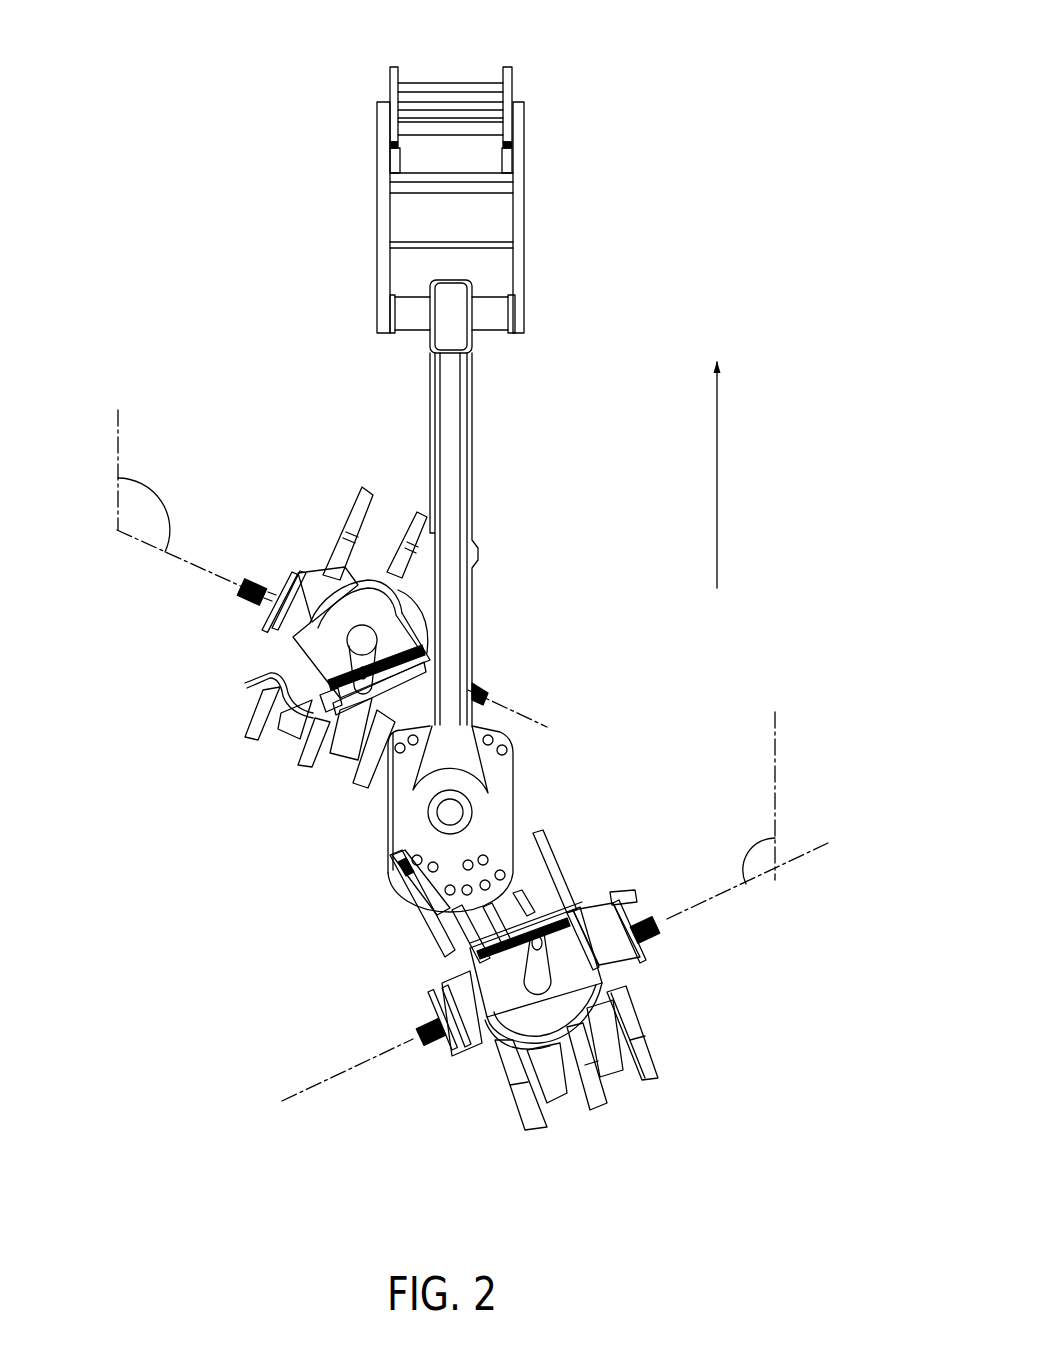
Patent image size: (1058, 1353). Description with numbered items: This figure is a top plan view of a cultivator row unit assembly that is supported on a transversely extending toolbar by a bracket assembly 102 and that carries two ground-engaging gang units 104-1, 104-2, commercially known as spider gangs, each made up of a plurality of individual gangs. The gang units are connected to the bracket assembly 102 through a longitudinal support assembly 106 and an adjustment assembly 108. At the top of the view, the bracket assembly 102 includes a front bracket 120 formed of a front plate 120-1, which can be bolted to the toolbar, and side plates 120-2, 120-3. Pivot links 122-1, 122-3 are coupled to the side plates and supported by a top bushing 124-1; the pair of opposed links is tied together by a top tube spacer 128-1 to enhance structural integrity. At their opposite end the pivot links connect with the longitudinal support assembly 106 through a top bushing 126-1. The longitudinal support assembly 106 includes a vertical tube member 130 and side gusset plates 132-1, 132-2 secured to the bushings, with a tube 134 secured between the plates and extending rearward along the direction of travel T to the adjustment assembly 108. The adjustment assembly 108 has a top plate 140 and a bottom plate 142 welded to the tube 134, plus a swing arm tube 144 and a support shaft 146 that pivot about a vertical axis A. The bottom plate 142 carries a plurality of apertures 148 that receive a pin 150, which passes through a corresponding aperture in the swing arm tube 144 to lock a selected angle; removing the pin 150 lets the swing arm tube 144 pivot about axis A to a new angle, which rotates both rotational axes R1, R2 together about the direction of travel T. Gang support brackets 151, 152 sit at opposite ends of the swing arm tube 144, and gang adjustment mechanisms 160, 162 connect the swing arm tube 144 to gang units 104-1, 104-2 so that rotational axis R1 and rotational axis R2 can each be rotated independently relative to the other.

The bracket assembly 102 is at (459, 168).
The gang unit 104-1 is at (332, 599).
The gang unit 104-2 is at (555, 953).
The longitudinal support assembly 106 is at (469, 502).
The adjustment assembly 108 is at (482, 796).
The front bracket 120 is at (438, 86).
The front plate 120-1 is at (453, 82).
The side plate 120-2 is at (390, 70).
The side plate 120-3 is at (507, 67).
The pivot link 122-1 is at (380, 205).
The pivot link 122-3 is at (517, 193).
The top bushing 124-1 is at (465, 128).
The top bushing 126-1 is at (488, 320).
The top tube spacer 128-1 is at (407, 225).
The vertical tube member 130 is at (452, 338).
The side gusset plate 132-1 is at (430, 362).
The side gusset plate 132-2 is at (475, 435).
The tube 134 is at (442, 407).
The top plate 140 is at (455, 767).
The bottom plate 142 is at (398, 805).
The swing arm tube 144 is at (507, 902).
The support shaft 146 is at (472, 813).
The apertures 148 is at (493, 727).
The pin 150 is at (400, 893).
The gang support bracket 151 is at (355, 603).
The gang support bracket 152 is at (527, 1000).
The gang adjustment mechanism 160 is at (335, 635).
The gang adjustment mechanism 162 is at (558, 953).
The vertical axis A is at (449, 813).
The rotational axis R1 is at (192, 567).
The rotational axis R2 is at (320, 1084).
The direction of travel T is at (718, 478).